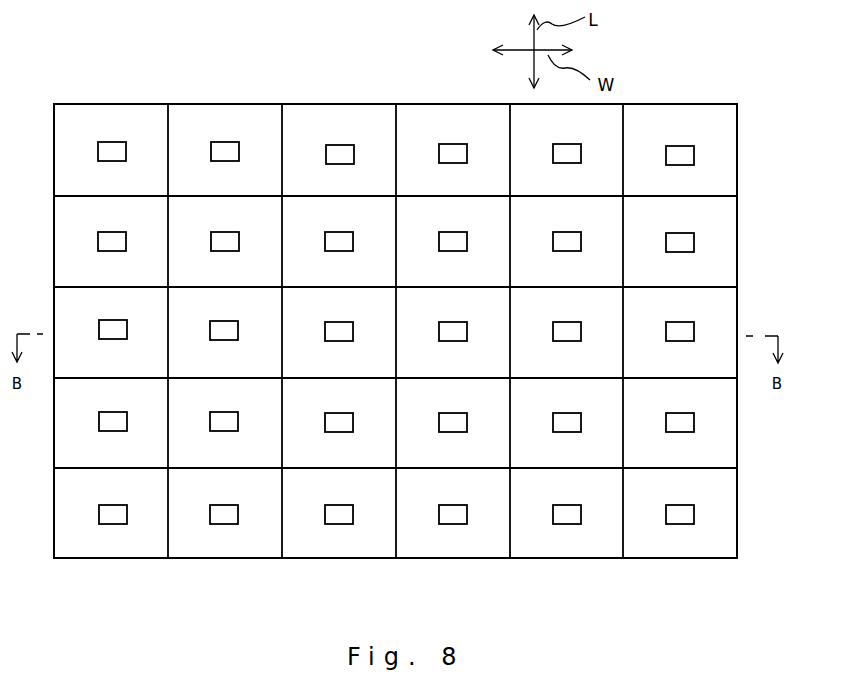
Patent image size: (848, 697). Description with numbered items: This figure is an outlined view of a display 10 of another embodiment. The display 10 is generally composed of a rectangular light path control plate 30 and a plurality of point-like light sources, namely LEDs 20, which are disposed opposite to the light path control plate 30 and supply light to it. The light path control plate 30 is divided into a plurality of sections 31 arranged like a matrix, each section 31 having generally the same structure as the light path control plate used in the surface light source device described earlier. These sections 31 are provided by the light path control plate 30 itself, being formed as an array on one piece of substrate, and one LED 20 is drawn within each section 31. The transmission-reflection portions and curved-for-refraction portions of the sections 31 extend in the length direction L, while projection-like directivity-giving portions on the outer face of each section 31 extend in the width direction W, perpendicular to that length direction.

The display 10 is at (713, 98).
The LED 20 is at (343, 153).
The light path control plate 30 is at (739, 129).
The section 31 is at (372, 138).